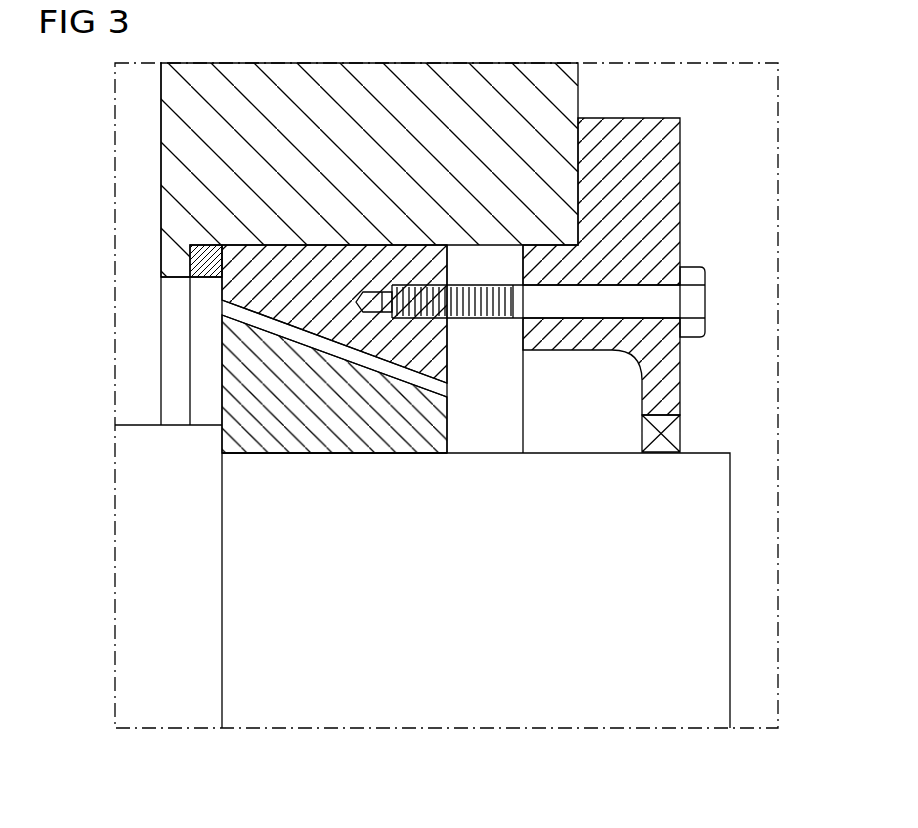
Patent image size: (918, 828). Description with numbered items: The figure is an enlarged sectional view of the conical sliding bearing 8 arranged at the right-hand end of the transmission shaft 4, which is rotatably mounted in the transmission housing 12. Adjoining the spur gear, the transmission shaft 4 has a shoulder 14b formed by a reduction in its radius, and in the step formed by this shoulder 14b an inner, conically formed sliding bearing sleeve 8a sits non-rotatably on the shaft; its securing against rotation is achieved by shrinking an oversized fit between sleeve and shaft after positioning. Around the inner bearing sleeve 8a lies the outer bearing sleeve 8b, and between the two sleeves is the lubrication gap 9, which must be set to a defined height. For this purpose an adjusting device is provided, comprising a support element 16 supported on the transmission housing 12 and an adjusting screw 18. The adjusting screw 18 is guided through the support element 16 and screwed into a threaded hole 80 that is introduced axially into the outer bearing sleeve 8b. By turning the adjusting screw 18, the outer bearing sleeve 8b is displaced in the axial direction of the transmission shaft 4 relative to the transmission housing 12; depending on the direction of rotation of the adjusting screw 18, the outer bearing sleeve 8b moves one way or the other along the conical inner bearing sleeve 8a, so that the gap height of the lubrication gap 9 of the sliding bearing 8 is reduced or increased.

The transmission shaft 4 is at (710, 612).
The conical sliding bearing 8 is at (337, 454).
The inner conically formed sliding bearing sleeve 8a is at (240, 391).
The outer bearing sleeve 8b is at (257, 274).
The lubrication gap 9 is at (232, 309).
The transmission housing 12 is at (560, 88).
The shoulder 14b is at (222, 427).
The support element 16 is at (672, 162).
The adjusting screw 18 is at (696, 300).
The threaded hole 80 is at (372, 320).